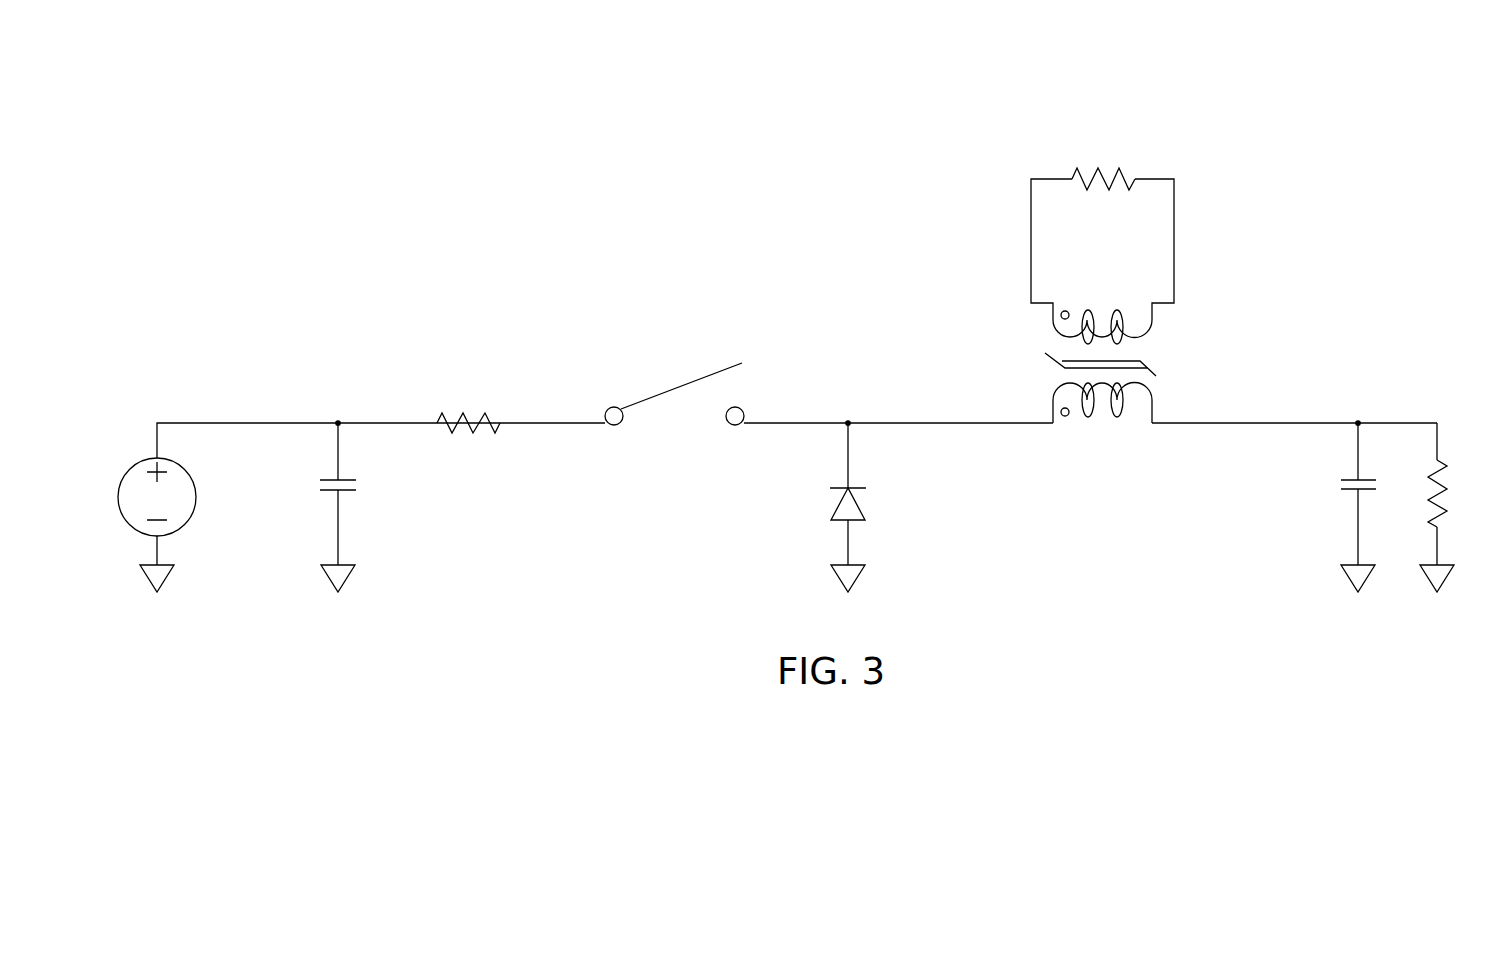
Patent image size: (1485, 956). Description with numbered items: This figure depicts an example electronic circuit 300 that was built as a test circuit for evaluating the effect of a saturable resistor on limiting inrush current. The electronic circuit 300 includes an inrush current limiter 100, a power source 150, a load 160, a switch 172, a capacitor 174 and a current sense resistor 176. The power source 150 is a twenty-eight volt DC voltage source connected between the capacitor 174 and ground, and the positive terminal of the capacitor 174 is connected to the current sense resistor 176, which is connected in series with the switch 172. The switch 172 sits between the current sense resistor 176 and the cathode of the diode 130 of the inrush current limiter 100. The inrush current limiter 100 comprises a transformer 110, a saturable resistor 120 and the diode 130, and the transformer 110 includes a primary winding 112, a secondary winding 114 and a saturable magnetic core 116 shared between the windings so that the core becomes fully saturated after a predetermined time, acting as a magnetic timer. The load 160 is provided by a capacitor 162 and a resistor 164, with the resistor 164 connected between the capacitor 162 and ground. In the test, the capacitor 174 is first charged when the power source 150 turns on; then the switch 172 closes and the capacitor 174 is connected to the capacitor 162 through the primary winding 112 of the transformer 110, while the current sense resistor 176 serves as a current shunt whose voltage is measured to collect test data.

The electronic circuit 300 is at (345, 150).
The inrush current limiter 100 is at (835, 240).
The transformer 110 is at (1020, 286).
The primary winding 112 is at (1131, 432).
The secondary winding 114 is at (1158, 327).
The saturable magnetic core 116 is at (1064, 376).
The saturable resistor 120 is at (1088, 162).
The diode 130 is at (818, 494).
The power source 150 is at (143, 447).
The load 160 is at (1418, 372).
The capacitor 162 is at (1340, 498).
The resistor 164 is at (1456, 457).
The switch 172 is at (668, 383).
The capacitor 174 is at (318, 497).
The current sense resistor 176 is at (453, 410).